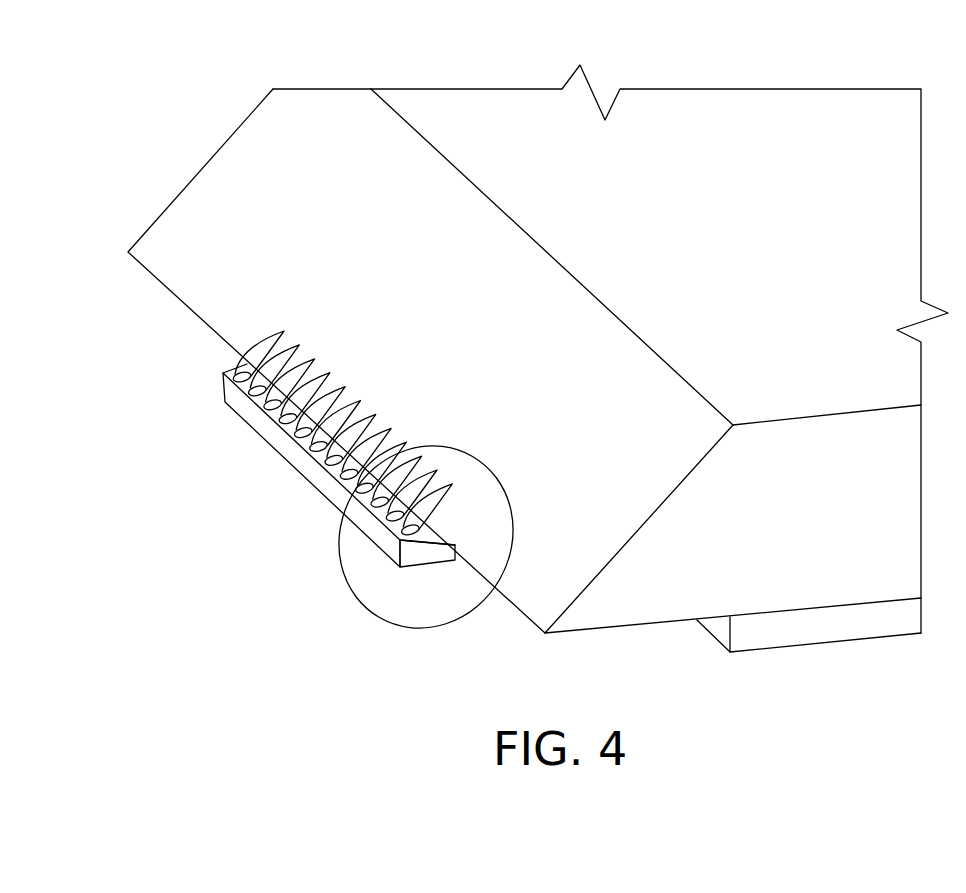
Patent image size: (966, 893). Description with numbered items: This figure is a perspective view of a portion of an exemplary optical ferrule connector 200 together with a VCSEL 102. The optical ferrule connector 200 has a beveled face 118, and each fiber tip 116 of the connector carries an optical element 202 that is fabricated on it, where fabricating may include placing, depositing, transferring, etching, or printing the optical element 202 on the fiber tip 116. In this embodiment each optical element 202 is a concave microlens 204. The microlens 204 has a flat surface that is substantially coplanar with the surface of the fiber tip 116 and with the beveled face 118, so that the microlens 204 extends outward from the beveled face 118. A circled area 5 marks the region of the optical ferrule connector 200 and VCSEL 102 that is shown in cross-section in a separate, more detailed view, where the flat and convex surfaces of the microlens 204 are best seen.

The optical ferrule connector 200 is at (172, 106).
The beveled face 118 is at (220, 188).
The VCSEL 102 is at (337, 488).
The fiber tip 116 is at (224, 364).
The optical element 202 is at (246, 362).
The concave microlens 204 is at (353, 441).
The area 5 is at (367, 620).